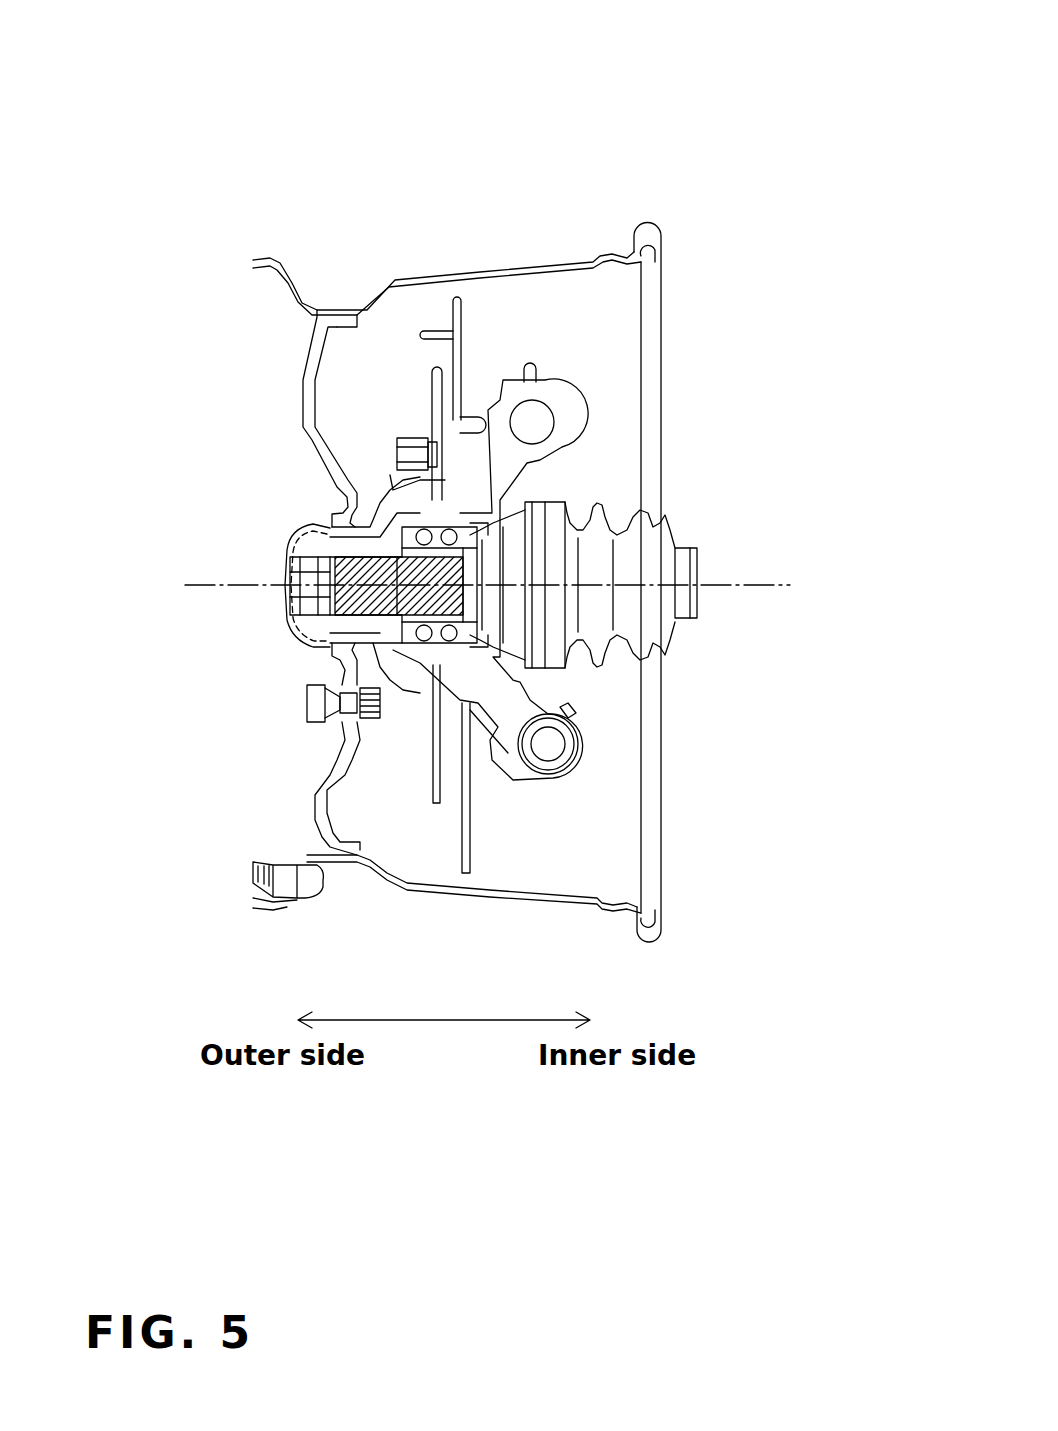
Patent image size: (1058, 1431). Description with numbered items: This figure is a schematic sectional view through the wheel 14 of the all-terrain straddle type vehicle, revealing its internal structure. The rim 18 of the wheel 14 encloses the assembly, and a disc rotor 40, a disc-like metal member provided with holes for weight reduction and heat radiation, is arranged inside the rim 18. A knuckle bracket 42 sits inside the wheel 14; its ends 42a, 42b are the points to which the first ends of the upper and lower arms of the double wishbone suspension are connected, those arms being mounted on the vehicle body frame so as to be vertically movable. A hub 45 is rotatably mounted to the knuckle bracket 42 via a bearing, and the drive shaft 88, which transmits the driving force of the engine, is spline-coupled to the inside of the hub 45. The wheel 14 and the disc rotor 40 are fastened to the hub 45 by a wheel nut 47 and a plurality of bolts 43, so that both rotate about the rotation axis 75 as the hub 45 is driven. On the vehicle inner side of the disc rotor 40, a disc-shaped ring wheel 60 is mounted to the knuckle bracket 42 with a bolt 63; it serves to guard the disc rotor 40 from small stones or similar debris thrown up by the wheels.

The wheel 14 is at (585, 233).
The rim 18 is at (598, 258).
The disc rotor 40 is at (436, 804).
The knuckle bracket 42 is at (565, 383).
The end of knuckle bracket 42a is at (560, 420).
The end of knuckle bracket 42b is at (565, 757).
The bolt 43 is at (397, 447).
The hub 45 is at (397, 438).
The wheel nut 47 is at (305, 718).
The ring wheel 60 is at (480, 890).
The bolt 63 is at (470, 420).
The rotation axis 75 is at (227, 588).
The drive shaft 88 is at (712, 617).